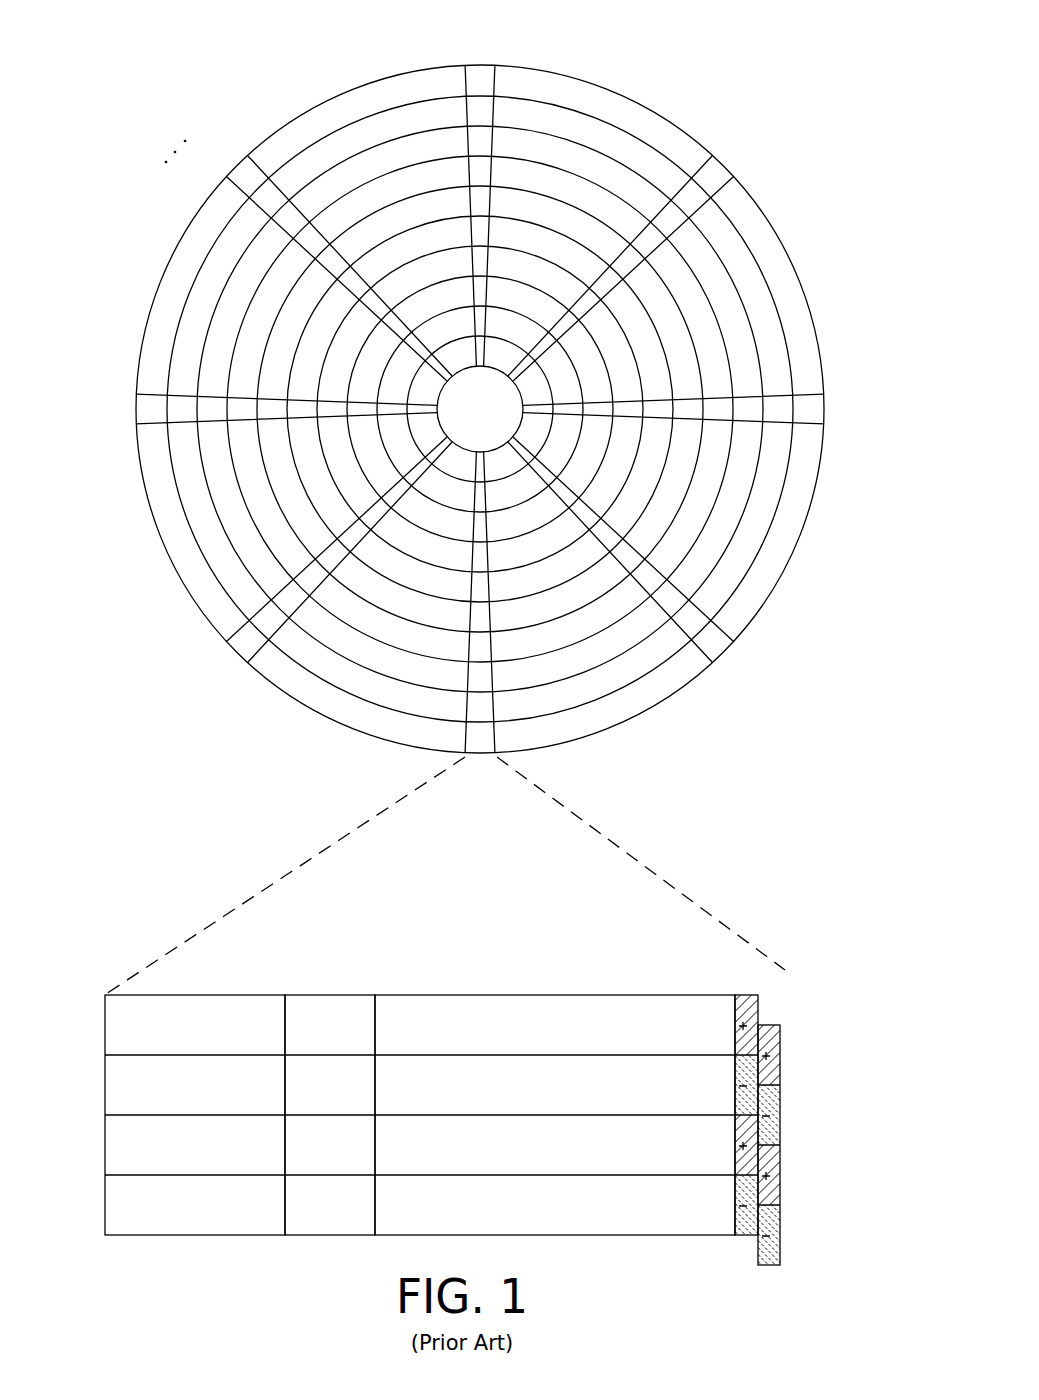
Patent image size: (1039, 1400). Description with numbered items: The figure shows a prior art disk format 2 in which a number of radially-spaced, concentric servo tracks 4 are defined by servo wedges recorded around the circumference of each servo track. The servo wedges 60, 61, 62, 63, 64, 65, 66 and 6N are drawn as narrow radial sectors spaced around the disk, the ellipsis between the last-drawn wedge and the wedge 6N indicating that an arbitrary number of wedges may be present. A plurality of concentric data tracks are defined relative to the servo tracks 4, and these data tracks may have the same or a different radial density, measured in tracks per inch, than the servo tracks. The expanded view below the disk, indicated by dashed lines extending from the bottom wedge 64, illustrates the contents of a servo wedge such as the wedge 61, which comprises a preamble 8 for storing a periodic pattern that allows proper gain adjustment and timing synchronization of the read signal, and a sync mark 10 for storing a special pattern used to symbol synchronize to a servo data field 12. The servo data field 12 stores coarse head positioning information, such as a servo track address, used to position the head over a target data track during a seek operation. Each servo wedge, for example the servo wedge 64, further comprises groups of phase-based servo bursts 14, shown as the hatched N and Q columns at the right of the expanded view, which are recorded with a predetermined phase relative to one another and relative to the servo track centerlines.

The disk format 2 is at (480, 379).
The servo track 4 is at (597, 135).
The servo wedge 60 is at (482, 75).
The servo wedge 61 is at (715, 173).
The servo wedge 62 is at (817, 412).
The servo wedge 63 is at (713, 647).
The servo wedge 64 is at (330, 836).
The servo wedge 65 is at (242, 648).
The servo wedge 66 is at (145, 407).
The servo wedge 6N is at (240, 172).
The preamble 8 is at (205, 993).
The sync mark 10 is at (334, 993).
The servo data field 12 is at (542, 993).
The servo bursts 14 is at (773, 995).